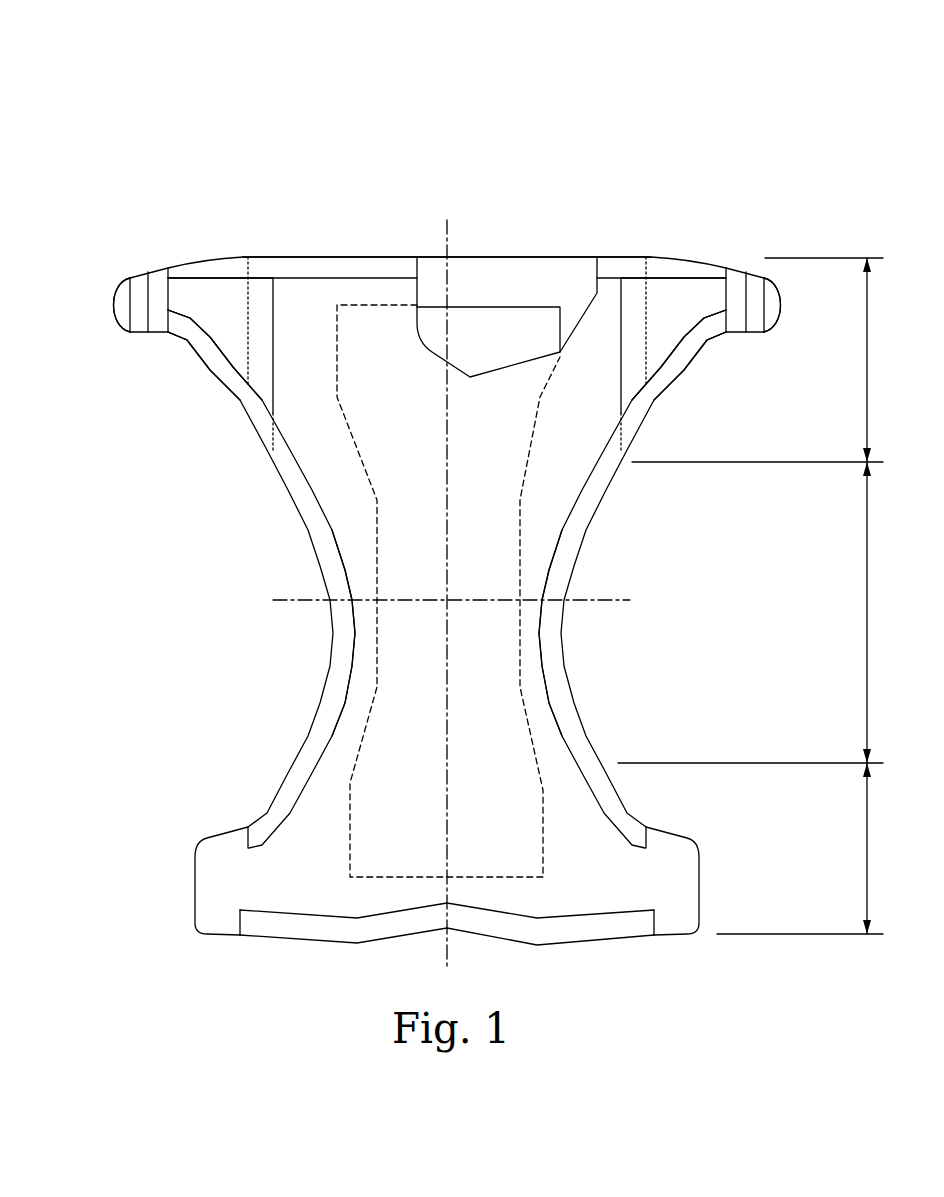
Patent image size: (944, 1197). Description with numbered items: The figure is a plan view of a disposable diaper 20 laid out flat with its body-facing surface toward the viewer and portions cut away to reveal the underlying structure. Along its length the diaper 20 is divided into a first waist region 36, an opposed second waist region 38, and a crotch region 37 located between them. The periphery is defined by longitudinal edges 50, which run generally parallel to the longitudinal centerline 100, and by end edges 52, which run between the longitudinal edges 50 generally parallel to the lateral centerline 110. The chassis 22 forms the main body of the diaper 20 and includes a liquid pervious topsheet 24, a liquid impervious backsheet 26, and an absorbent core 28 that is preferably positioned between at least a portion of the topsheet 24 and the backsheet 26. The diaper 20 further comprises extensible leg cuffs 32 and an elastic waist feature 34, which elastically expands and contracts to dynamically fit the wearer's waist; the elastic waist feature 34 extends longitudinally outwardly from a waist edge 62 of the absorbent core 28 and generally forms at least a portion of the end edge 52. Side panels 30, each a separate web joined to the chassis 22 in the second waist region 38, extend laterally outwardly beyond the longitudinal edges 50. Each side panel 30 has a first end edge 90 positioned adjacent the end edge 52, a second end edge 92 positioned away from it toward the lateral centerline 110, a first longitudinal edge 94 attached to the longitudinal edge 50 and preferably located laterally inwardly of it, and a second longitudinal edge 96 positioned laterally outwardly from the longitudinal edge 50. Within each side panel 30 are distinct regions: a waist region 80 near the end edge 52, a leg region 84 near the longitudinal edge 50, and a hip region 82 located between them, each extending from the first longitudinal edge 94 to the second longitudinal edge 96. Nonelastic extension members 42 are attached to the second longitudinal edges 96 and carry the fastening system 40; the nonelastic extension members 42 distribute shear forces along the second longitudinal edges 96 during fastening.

The diaper 20 is at (144, 130).
The chassis 22 is at (318, 808).
The topsheet 24 is at (287, 327).
The backsheet 26 is at (553, 283).
The absorbent core 28 is at (513, 343).
The side panels 30 is at (193, 263).
The extensible leg cuffs 32 is at (342, 645).
The elastic waist feature 34 is at (372, 278).
The first waist region 36 is at (800, 848).
The crotch region 37 is at (751, 612).
The second waist region 38 is at (757, 360).
The fastening system 40 is at (140, 288).
The nonelastic extension members 42 is at (115, 303).
The longitudinal edges 50 is at (307, 530).
The end edges 52 is at (320, 257).
The waist edge 62 is at (375, 313).
The waist region 80 is at (218, 268).
The hip region 82 is at (241, 323).
The leg region 84 is at (185, 328).
The first end edge 90 is at (242, 258).
The second end edge 92 is at (208, 368).
The first longitudinal edge 94 is at (272, 393).
The second longitudinal edge 96 is at (165, 295).
The longitudinal centerline 100 is at (448, 232).
The lateral centerline 110 is at (288, 596).